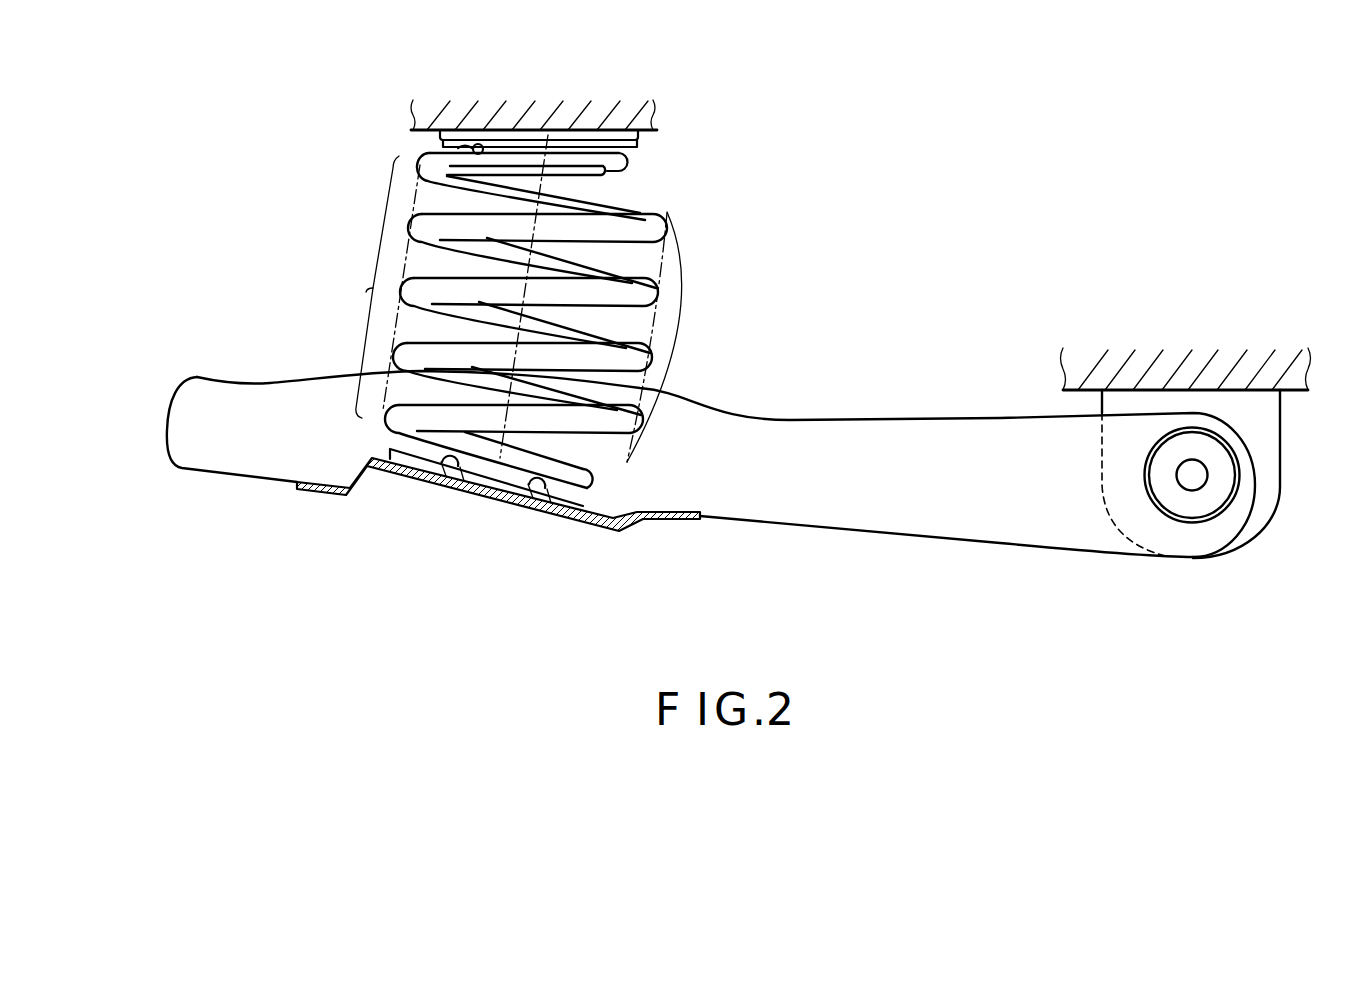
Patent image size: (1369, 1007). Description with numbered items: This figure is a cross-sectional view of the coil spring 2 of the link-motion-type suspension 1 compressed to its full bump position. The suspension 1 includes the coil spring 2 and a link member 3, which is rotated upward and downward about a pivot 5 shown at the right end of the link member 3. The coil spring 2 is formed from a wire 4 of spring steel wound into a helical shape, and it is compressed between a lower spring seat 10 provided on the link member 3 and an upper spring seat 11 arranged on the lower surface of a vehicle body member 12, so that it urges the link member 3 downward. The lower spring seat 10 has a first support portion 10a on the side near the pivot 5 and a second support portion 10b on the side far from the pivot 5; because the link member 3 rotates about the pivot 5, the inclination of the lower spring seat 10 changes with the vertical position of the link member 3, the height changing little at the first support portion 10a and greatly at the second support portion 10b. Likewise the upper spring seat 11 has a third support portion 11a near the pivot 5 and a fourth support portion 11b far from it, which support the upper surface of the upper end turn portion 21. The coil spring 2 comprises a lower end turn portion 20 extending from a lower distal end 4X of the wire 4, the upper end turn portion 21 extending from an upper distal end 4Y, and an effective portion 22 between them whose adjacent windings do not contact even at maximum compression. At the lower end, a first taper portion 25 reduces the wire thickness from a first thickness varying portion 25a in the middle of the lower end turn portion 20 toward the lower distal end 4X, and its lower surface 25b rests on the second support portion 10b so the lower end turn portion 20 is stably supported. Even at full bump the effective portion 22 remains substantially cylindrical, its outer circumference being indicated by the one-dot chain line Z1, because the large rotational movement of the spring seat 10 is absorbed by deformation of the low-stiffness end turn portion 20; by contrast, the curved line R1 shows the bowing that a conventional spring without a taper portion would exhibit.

The suspension 1 is at (320, 216).
The coil spring 2 is at (712, 220).
The link member 3 is at (929, 528).
The wire 4 is at (524, 310).
The lower distal end 4X is at (492, 453).
The upper distal end 4Y is at (508, 169).
The pivot 5 is at (1196, 475).
The lower spring seat 10 is at (498, 518).
The first support portion 10a is at (536, 492).
The second support portion 10b is at (449, 466).
The upper spring seat 11 is at (566, 113).
The third support portion 11a is at (637, 154).
The fourth support portion 11b is at (488, 147).
The vehicle body member 12 is at (615, 108).
The lower end turn portion 20 is at (592, 485).
The upper end turn portion 21 is at (615, 167).
The effective portion 22 is at (368, 290).
The first taper portion 25 is at (498, 506).
The first thickness varying portion 25a is at (571, 510).
The lower surface of the first taper portion 25b is at (492, 478).
The curved line R1 is at (688, 291).
The one-dot chain line Z1 is at (655, 332).